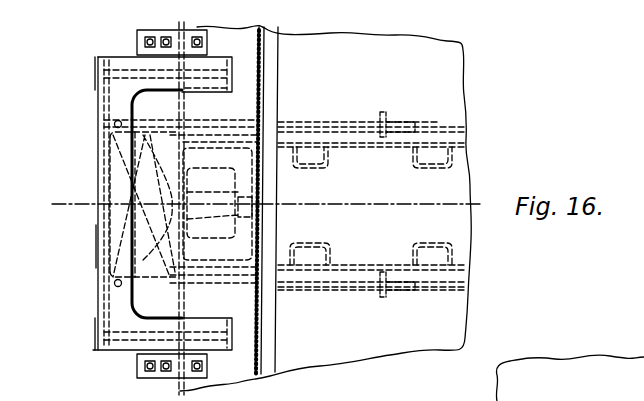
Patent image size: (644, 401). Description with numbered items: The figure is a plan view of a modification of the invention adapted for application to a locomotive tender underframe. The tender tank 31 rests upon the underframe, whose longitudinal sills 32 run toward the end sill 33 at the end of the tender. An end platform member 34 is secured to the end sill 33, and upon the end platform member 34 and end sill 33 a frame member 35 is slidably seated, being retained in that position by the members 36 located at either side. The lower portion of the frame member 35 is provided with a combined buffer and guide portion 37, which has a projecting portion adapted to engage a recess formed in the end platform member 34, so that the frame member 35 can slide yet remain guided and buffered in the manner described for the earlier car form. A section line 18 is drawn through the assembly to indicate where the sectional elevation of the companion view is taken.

The section line 18 is at (265, 205).
The tender tank 31 is at (412, 213).
The sills of the underframe 32 is at (357, 138).
The end sill 33 is at (183, 386).
The end platform member 34 is at (147, 290).
The frame member 35 is at (116, 104).
The retaining members 36 is at (136, 44).
The combined buffer and guide portion 37 is at (97, 246).